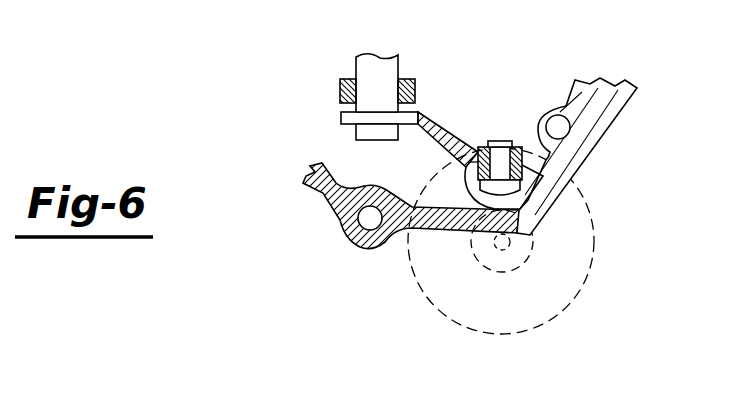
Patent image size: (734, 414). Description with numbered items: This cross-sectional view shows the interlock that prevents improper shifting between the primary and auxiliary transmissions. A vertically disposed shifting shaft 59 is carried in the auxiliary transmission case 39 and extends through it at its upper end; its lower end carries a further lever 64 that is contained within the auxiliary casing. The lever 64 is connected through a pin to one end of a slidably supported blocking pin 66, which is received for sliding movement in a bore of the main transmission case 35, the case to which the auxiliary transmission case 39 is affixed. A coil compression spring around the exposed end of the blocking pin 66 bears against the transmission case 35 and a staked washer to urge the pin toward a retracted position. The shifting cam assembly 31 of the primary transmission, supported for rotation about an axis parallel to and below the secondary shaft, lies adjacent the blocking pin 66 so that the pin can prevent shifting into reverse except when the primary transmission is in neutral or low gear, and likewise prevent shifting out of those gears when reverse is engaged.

The shifting cam assembly 31 is at (594, 242).
The main transmission case 35 is at (612, 121).
The auxiliary transmission case 39 is at (340, 98).
The shifting shaft 59 is at (398, 71).
The further lever 64 is at (448, 130).
The blocking pin 66 is at (522, 177).